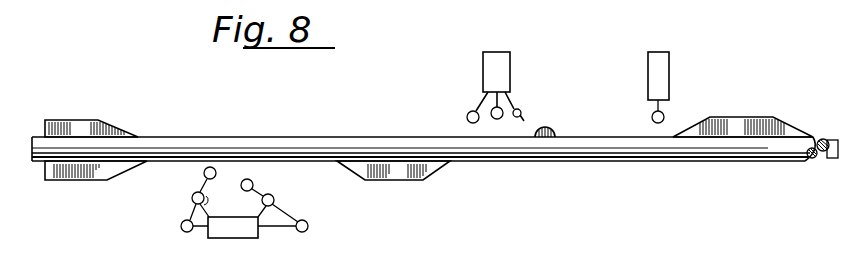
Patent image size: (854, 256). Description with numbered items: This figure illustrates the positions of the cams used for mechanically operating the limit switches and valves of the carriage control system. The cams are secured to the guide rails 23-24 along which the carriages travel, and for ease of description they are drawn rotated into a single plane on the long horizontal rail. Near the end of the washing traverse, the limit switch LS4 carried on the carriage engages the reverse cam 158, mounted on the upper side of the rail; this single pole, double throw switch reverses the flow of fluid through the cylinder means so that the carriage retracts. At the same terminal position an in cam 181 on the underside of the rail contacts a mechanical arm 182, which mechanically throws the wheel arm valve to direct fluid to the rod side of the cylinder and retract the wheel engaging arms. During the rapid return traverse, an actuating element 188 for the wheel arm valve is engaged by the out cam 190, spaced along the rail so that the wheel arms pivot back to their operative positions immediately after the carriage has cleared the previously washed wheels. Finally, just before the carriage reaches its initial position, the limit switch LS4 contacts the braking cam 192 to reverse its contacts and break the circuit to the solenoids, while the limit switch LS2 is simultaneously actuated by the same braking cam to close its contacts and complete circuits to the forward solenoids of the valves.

The guide rails 23-24 is at (245, 142).
The reverse cam 158 is at (78, 132).
The in cam 181 is at (97, 170).
The mechanical arm 182 is at (192, 188).
The actuating element 188 is at (255, 192).
The out cam 190 is at (410, 170).
The braking cam 192 is at (733, 128).
The limit switch LS4 is at (505, 70).
The limit switch LS2 is at (677, 33).